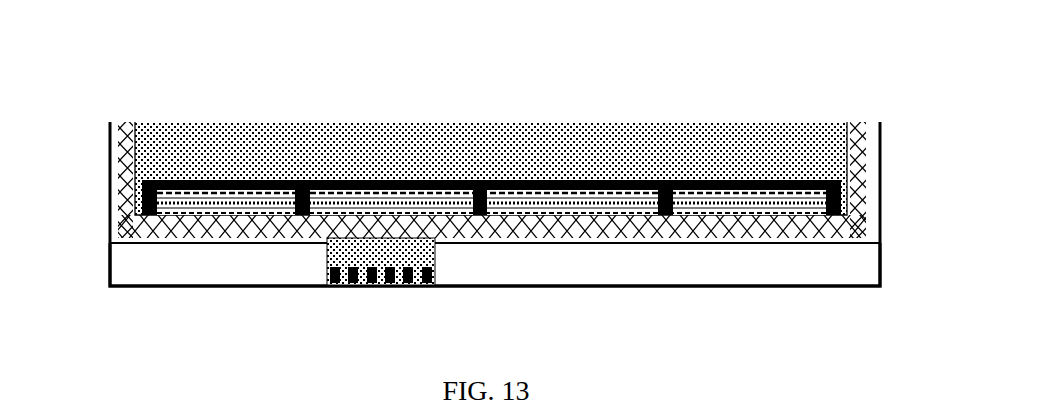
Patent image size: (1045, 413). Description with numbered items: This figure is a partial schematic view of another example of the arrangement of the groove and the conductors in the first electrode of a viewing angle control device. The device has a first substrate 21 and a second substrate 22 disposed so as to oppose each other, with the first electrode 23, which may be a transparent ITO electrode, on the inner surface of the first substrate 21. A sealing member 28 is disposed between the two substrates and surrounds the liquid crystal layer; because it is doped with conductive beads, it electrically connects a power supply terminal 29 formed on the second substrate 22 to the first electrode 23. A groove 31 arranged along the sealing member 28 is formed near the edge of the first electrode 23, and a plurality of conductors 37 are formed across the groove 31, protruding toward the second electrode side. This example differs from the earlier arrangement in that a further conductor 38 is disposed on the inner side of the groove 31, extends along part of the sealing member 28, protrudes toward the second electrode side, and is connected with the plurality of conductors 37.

The first substrate 21 is at (108, 215).
The second substrate 22 is at (197, 288).
The first electrode 23 is at (748, 148).
The sealing member 28 is at (130, 168).
The power supply terminal 29 is at (340, 287).
The groove 31 is at (178, 213).
The conductor 37 is at (843, 200).
The conductor 38 is at (797, 180).